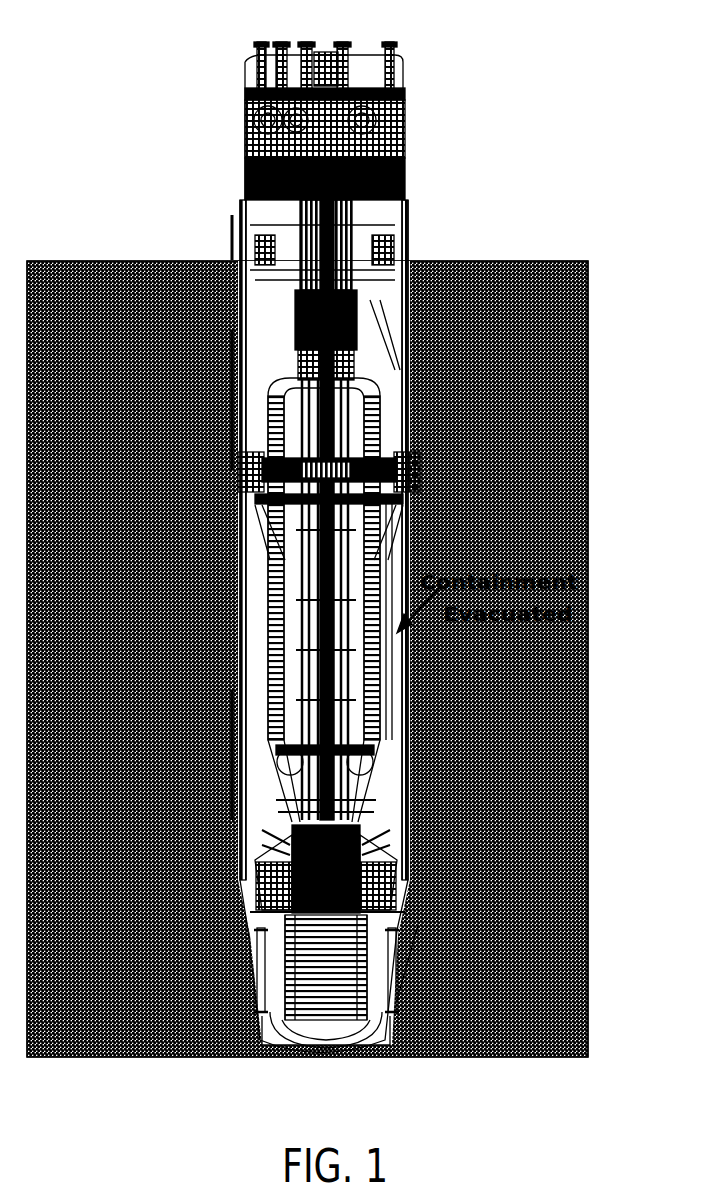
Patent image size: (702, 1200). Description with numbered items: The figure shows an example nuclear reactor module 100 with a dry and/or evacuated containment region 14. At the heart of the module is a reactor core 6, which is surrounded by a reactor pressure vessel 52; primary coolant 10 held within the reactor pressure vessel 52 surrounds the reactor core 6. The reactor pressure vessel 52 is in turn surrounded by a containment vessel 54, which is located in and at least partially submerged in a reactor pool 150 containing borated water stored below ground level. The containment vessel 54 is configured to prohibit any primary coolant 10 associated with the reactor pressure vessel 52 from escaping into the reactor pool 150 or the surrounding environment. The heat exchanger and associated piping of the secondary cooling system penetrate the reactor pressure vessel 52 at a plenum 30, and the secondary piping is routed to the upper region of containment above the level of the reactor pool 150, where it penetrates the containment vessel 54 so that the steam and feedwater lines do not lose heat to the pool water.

The nuclear reactor module 100 is at (482, 100).
The reactor pool 150 is at (525, 406).
The plenum 30 is at (245, 472).
The primary coolant 10 is at (268, 600).
The containment vessel 54 is at (240, 672).
The reactor pressure vessel 52 is at (398, 680).
The containment region 14 is at (392, 808).
The reactor core 6 is at (270, 975).